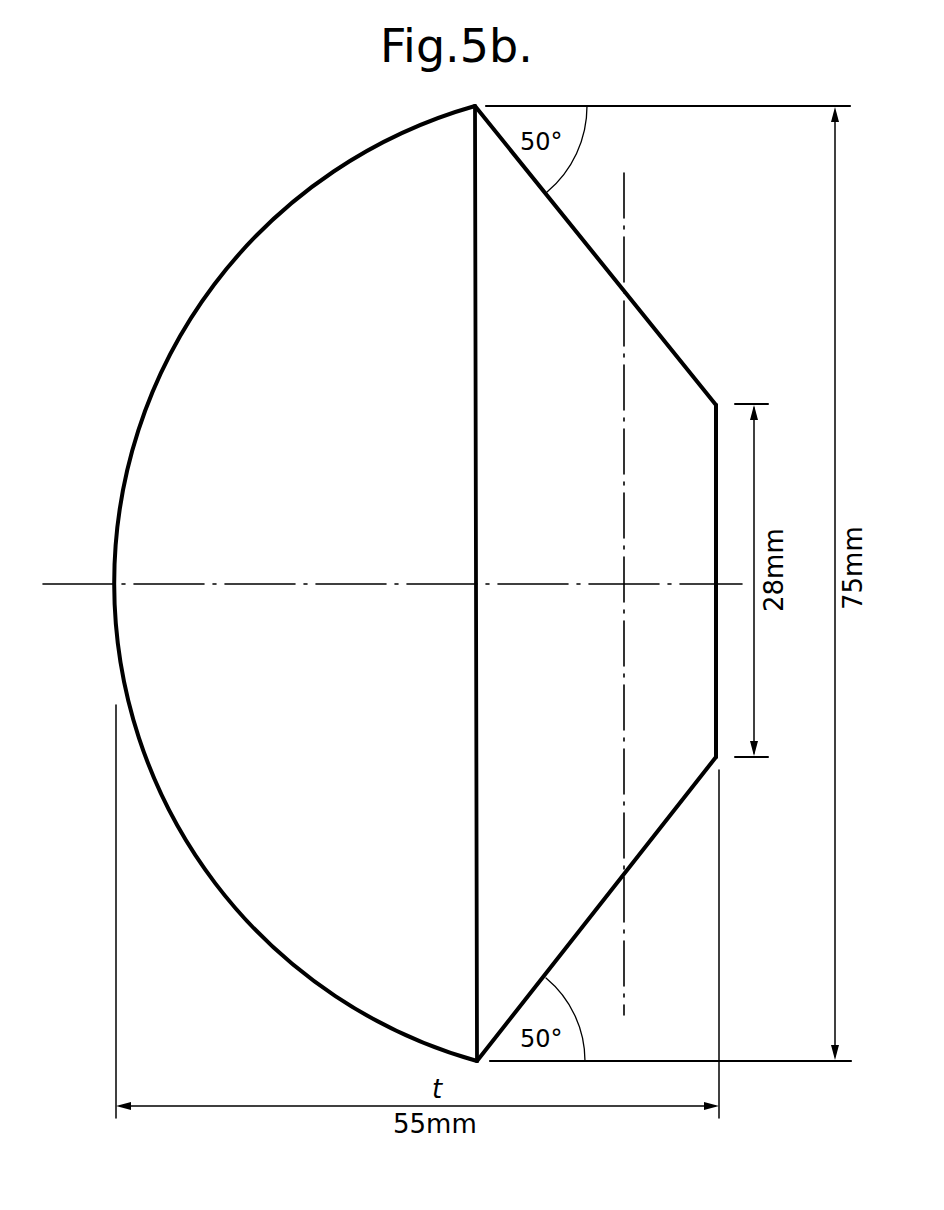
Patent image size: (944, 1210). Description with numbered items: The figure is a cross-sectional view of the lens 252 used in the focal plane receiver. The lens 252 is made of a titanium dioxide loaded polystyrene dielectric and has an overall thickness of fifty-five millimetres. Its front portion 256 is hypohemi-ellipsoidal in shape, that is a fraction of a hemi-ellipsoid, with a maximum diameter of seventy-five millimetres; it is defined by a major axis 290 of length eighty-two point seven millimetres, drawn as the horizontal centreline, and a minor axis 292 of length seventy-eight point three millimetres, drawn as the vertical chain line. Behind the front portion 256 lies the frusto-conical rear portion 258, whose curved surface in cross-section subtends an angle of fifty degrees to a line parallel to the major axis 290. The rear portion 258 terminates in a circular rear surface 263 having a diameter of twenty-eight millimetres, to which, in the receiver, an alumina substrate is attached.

The lens 252 is at (208, 296).
The front portion 256 is at (419, 583).
The rear portion 258 is at (663, 360).
The rear surface 263 is at (717, 418).
The major axis 290 is at (67, 583).
The minor axis 292 is at (624, 191).